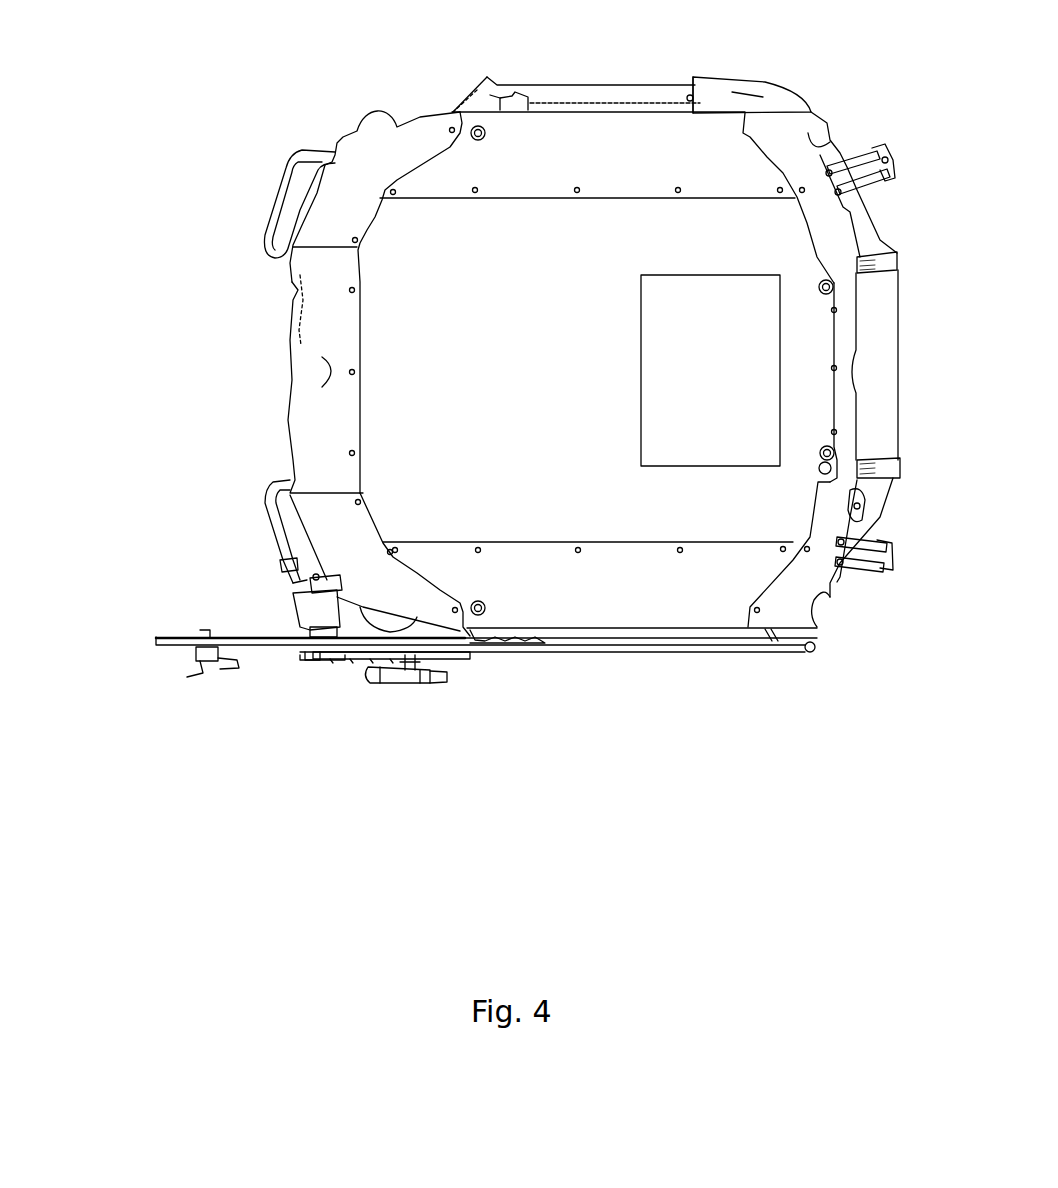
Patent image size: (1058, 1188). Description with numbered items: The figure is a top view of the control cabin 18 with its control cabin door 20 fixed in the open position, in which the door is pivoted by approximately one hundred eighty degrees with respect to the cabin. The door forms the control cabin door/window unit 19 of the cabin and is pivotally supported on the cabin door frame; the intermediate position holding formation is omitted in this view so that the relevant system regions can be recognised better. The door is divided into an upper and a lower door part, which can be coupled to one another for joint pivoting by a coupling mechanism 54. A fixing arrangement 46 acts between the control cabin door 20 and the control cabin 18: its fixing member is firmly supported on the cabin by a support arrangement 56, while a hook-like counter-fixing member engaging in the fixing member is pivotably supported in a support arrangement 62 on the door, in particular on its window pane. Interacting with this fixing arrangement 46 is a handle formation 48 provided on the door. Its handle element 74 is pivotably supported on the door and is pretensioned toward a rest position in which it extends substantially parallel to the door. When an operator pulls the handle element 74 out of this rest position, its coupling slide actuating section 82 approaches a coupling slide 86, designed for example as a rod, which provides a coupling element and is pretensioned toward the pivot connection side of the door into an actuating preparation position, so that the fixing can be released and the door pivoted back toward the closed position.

The control cabin 18 is at (765, 82).
The control cabin door/window unit 19 is at (431, 642).
The control cabin door 20 is at (163, 632).
The fixing arrangement 46 is at (290, 708).
The handle formation 48 is at (447, 736).
The coupling mechanism 54 is at (178, 682).
The support arrangement 56 is at (283, 580).
The support arrangement 62 is at (310, 653).
The handle element 74 is at (387, 683).
The coupling slide actuating section 82 is at (440, 684).
The coupling slide 86 is at (352, 660).